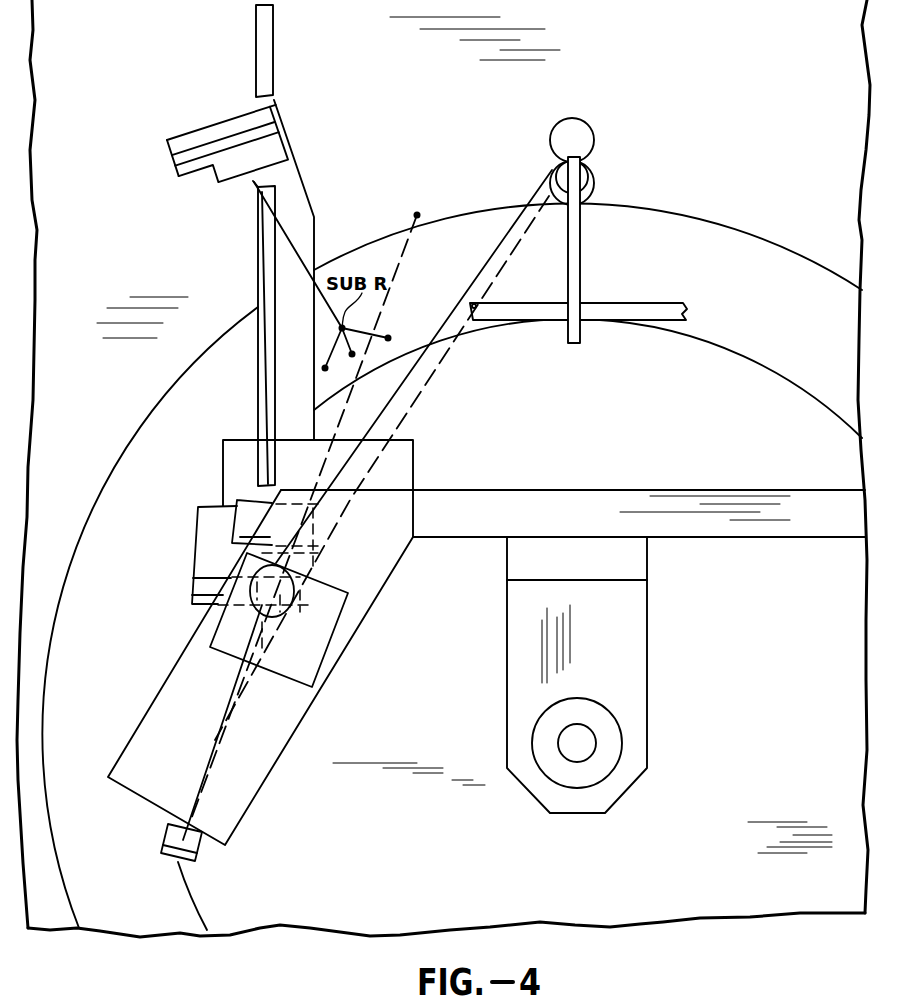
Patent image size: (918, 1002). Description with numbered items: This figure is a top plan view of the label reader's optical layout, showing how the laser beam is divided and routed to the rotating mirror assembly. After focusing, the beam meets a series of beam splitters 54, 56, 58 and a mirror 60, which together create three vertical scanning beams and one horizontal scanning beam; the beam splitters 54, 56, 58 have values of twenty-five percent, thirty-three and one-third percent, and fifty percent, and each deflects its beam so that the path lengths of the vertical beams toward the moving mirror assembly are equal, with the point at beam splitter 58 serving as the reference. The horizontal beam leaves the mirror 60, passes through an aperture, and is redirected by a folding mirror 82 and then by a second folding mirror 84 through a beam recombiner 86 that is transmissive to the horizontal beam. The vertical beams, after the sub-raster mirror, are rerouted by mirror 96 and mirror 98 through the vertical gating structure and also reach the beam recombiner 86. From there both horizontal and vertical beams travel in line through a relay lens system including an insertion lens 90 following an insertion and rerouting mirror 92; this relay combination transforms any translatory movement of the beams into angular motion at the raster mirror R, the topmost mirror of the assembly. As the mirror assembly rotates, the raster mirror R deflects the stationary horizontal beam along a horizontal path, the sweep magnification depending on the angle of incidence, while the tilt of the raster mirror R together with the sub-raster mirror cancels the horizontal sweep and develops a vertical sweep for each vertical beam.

The beam splitter 54 is at (324, 368).
The beam splitter 56 is at (353, 354).
The beam splitter 58 is at (388, 338).
The mirror 60 is at (417, 215).
The folding mirror 82 is at (197, 849).
The second folding mirror 84 is at (221, 722).
The beam recombiner 86 is at (242, 646).
The insertion lens 90 is at (595, 185).
The insertion and rerouting mirror 92 is at (583, 134).
The mirror 96 is at (236, 179).
The mirror 98 is at (236, 518).
The raster mirror R is at (614, 266).